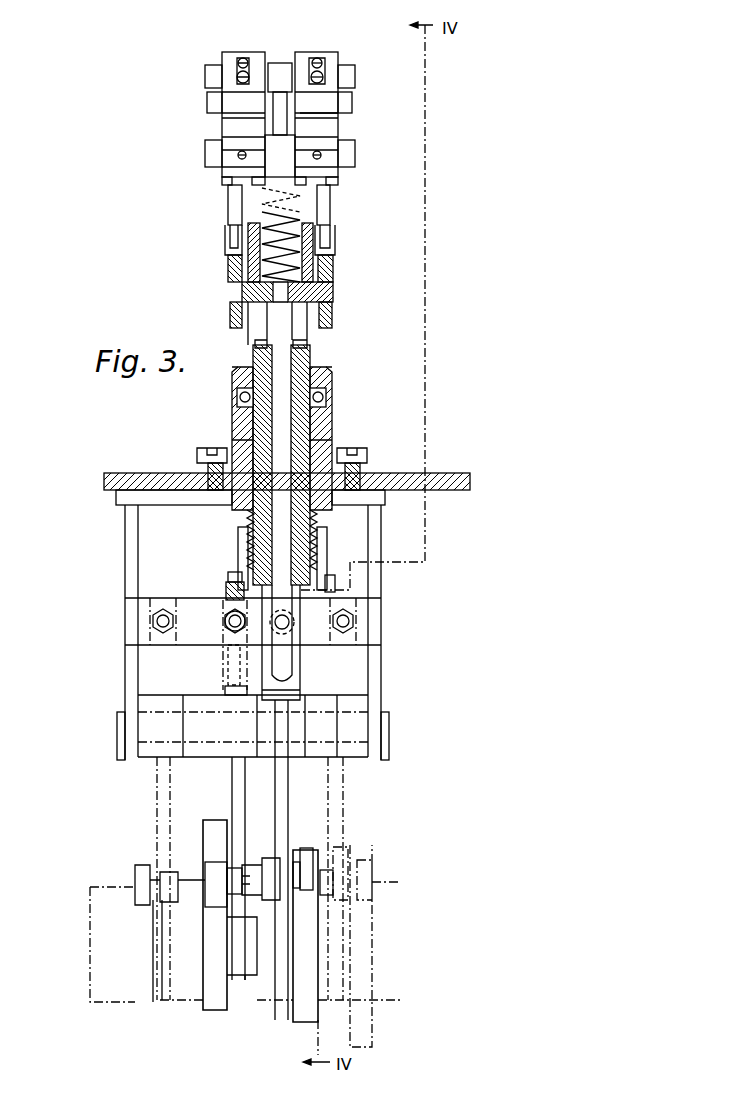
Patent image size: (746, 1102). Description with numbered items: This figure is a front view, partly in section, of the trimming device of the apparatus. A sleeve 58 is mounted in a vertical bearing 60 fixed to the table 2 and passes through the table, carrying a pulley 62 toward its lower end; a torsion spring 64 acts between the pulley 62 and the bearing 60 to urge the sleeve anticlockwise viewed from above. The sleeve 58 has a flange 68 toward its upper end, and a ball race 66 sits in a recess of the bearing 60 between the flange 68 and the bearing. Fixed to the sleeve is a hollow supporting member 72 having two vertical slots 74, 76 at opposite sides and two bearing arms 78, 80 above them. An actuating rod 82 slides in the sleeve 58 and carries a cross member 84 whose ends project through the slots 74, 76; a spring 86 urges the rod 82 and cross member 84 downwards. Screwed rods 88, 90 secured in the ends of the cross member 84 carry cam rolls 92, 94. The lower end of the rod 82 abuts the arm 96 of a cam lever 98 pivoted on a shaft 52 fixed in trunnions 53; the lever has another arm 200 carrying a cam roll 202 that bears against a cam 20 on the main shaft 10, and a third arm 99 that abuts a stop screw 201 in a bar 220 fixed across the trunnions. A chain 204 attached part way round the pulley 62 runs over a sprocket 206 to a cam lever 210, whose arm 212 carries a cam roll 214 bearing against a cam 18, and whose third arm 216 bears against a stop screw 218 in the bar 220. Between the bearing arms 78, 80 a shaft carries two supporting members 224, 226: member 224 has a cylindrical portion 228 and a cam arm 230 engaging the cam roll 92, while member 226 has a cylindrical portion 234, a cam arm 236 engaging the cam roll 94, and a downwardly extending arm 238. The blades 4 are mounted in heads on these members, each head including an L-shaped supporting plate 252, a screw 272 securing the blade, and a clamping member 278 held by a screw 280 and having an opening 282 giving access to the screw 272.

The table 2 is at (411, 473).
The blades 4 is at (333, 100).
The main shaft 10 is at (240, 977).
The cam 18 is at (213, 1006).
The cam 20 is at (303, 1020).
The shaft 52 is at (118, 719).
The trunnions 53 is at (125, 569).
The sleeve 58 is at (300, 432).
The vertical bearing 60 is at (320, 412).
The pulley 62 is at (324, 555).
The torsion spring 64 is at (312, 528).
The ball race 66 is at (327, 396).
The flange 68 is at (330, 372).
The hollow supporting member 72 is at (250, 333).
The vertical slot 74 is at (306, 276).
The vertical slot 76 is at (256, 282).
The bearing arm 78 is at (350, 130).
The bearing arm 80 is at (214, 108).
The actuating rod 82 is at (285, 356).
The cross member 84 is at (312, 296).
The spring 86 is at (298, 234).
The screwed rod 88 is at (325, 262).
The screwed rod 90 is at (230, 262).
The cam roll 92 is at (320, 224).
The cam roll 94 is at (225, 221).
The arm 96 is at (283, 718).
The cam lever 98 is at (290, 690).
The third arm 99 is at (297, 633).
The arm 200 is at (284, 800).
The stop screw 201 is at (290, 622).
The cam roll 202 is at (306, 850).
The chain 204 is at (228, 576).
The sprocket 206 is at (226, 590).
The cam lever 210 is at (213, 702).
The arm 212 is at (232, 786).
The cam roll 214 is at (212, 870).
The third arm 216 is at (228, 664).
The stop screw 218 is at (225, 619).
The bar 220 is at (381, 627).
The supporting member 224 is at (288, 64).
The supporting member 226 is at (268, 163).
The cylindrical portion 228 is at (333, 116).
The cam arm 230 is at (330, 198).
The cylindrical portion 234 is at (222, 117).
The cam arm 236 is at (228, 198).
The downwardly extending arm 238 is at (268, 149).
The L-shaped supporting plate 252 is at (348, 82).
The screw 272 is at (323, 78).
The clamping member 278 is at (330, 56).
The screw 280 is at (322, 64).
The opening 282 is at (314, 60).